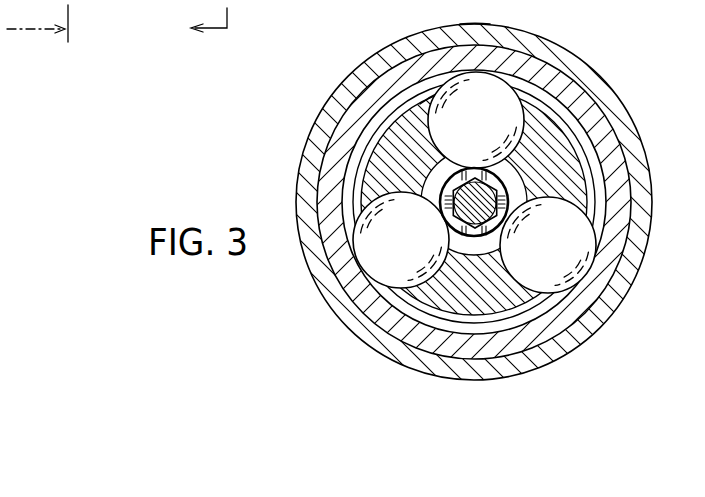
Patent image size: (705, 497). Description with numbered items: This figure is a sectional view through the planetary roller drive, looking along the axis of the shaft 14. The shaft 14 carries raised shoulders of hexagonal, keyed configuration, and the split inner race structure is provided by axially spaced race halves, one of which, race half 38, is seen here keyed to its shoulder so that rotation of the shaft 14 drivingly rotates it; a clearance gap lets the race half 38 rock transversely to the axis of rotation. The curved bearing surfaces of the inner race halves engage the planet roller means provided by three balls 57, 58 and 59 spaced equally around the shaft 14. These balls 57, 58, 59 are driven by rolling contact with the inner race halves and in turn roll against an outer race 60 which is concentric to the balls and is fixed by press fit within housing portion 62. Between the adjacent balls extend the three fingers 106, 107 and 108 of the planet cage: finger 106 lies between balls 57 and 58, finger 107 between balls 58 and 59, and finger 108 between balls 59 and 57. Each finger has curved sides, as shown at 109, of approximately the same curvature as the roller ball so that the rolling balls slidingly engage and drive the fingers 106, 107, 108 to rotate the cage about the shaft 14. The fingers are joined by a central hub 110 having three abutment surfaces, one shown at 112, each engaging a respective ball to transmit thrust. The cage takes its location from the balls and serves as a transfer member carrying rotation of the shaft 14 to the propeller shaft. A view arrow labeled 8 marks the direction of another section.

The section view arrow 8 is at (198, 24).
The central hub 110 is at (59, 23).
The shaft 14 is at (315, 115).
The race half 38 is at (460, 202).
The ball 57 is at (482, 98).
The ball 58 is at (543, 283).
The ball 59 is at (387, 263).
The outer race 60 is at (593, 112).
The housing portion 62 is at (590, 77).
The finger 106 is at (588, 198).
The finger 107 is at (490, 308).
The finger 108 is at (430, 200).
The curved side 109 is at (433, 112).
The abutment surface 112 is at (452, 12).